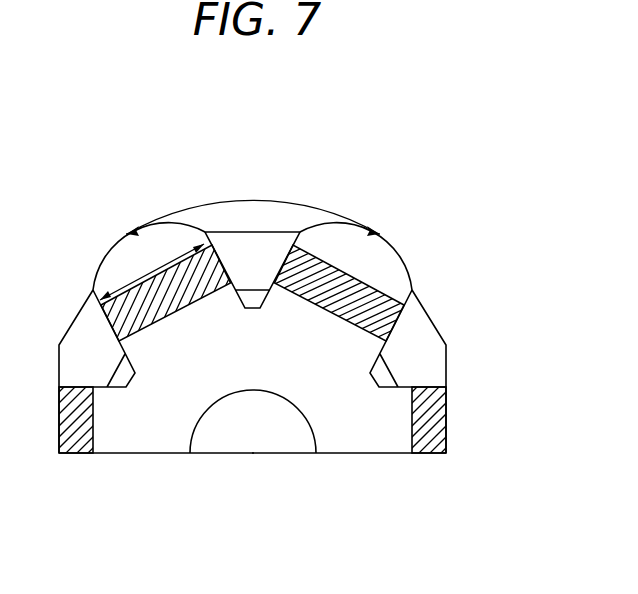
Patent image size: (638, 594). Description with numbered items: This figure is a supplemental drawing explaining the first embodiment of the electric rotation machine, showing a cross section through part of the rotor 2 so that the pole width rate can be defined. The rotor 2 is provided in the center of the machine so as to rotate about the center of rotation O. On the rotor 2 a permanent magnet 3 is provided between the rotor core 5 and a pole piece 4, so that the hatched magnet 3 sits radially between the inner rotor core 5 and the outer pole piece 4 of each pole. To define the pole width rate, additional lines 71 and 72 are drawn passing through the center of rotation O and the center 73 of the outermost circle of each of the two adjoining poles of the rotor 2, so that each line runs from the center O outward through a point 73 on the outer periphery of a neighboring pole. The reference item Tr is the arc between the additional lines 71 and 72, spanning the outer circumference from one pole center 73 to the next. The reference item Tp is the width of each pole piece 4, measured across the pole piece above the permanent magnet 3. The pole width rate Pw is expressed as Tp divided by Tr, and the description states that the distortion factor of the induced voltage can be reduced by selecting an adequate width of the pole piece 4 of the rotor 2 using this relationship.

The rotor 2 is at (363, 442).
The permanent magnet 3 is at (381, 300).
The pole piece 4 is at (388, 257).
The rotor core 5 is at (397, 420).
The additional line 71 is at (253, 453).
The additional line 72 is at (253, 453).
The center of the outermost circle 73 is at (377, 235).
The arc Tr is at (253, 204).
The width of pole piece Tp is at (152, 269).
The rotation center O is at (253, 453).